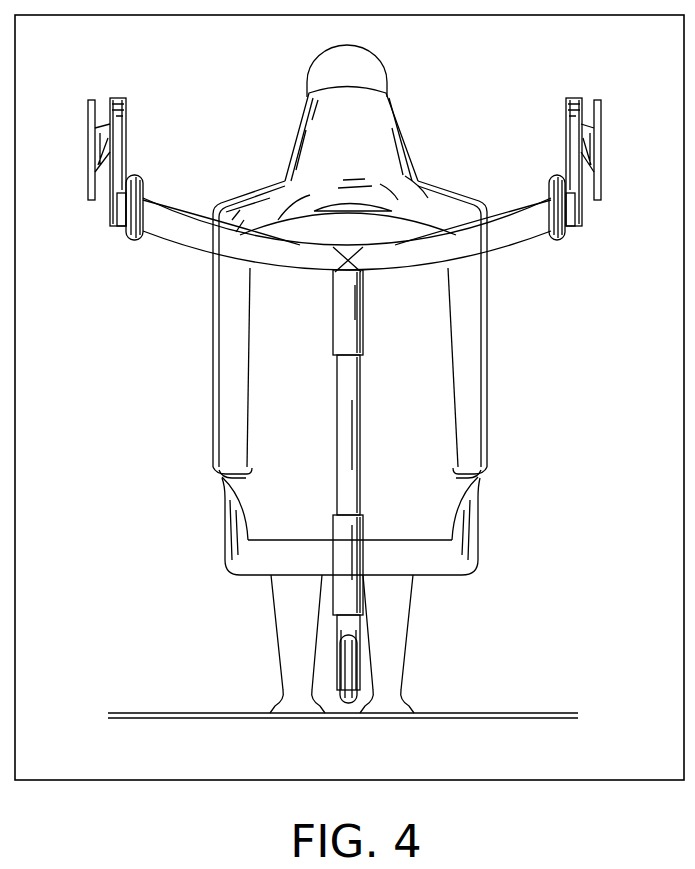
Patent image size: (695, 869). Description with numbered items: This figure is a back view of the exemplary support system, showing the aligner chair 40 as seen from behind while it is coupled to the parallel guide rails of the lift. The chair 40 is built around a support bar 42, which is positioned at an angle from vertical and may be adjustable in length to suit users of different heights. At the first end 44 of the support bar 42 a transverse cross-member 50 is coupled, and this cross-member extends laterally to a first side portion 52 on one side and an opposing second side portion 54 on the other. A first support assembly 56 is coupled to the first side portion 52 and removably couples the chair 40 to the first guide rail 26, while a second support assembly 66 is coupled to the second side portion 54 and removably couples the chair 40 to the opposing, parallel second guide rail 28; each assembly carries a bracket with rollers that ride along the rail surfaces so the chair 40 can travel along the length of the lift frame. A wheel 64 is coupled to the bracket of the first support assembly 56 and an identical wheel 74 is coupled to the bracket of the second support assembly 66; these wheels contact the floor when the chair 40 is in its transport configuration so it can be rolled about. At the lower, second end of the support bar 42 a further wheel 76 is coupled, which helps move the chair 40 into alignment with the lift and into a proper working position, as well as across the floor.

The first guide rail 26 is at (88, 130).
The second guide rail 28 is at (601, 130).
The chair 40 is at (524, 427).
The support bar 42 is at (360, 408).
The first end 44 is at (363, 305).
The transverse cross-member 50 is at (196, 254).
The first side portion 52 is at (192, 217).
The second side portion 54 is at (514, 217).
The first support assembly 56 is at (152, 84).
The wheel 64 is at (134, 240).
The second support assembly 66 is at (546, 84).
The wheel 74 is at (556, 240).
The wheel 76 is at (345, 703).